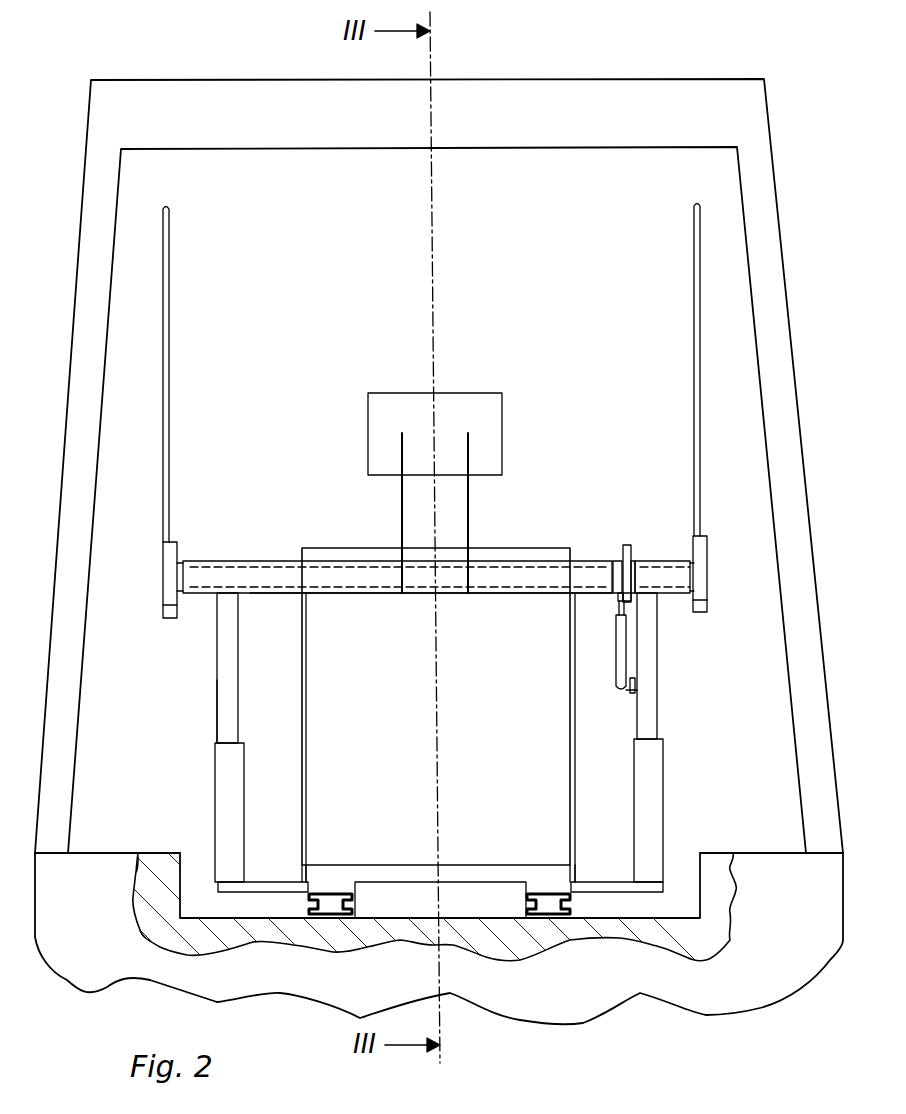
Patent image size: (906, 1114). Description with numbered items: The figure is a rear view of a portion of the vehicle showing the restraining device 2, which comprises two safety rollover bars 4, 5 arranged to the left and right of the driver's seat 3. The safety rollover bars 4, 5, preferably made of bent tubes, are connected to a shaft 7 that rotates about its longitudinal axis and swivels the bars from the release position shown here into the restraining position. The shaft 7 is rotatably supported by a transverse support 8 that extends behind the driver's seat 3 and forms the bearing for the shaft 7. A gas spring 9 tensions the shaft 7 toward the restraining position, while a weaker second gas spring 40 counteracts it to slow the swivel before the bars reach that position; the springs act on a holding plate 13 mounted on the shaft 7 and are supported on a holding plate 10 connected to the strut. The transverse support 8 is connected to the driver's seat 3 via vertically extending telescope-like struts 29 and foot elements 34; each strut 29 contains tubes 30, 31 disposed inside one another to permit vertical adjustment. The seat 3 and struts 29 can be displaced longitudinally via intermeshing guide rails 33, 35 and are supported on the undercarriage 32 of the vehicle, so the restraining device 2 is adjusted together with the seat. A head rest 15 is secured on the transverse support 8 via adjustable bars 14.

The restraining device 2 is at (163, 548).
The driver's seat 3 is at (387, 723).
The safety rollover bar 4 is at (164, 393).
The safety rollover bar 5 is at (699, 453).
The shaft 7 is at (270, 561).
The transverse support 8 is at (278, 594).
The gas spring 9 is at (616, 667).
The holding plate 10 is at (634, 697).
The holding plate 13 is at (629, 545).
The adjustable bars 14 is at (402, 483).
The head rest 15 is at (386, 393).
The telescope-like strut 29 is at (215, 705).
The tube 30 is at (217, 655).
The tube 31 is at (215, 772).
The undercarriage 32 is at (97, 850).
The guide rail 33 is at (357, 900).
The foot element 34 is at (273, 879).
The guide rail 35 is at (306, 900).
The second gas spring 40 is at (618, 559).